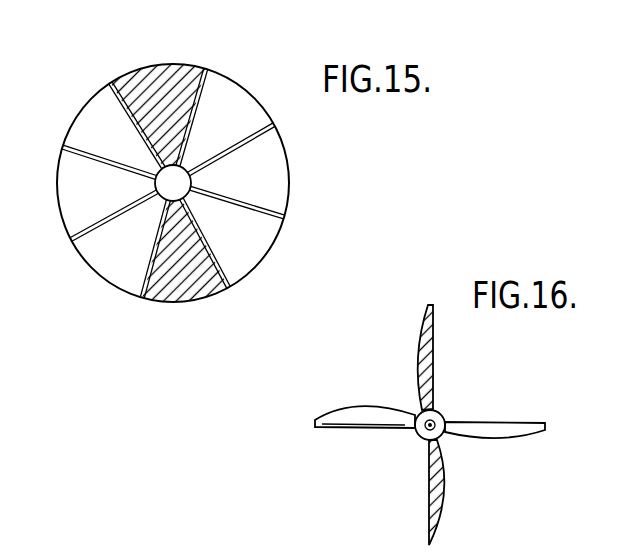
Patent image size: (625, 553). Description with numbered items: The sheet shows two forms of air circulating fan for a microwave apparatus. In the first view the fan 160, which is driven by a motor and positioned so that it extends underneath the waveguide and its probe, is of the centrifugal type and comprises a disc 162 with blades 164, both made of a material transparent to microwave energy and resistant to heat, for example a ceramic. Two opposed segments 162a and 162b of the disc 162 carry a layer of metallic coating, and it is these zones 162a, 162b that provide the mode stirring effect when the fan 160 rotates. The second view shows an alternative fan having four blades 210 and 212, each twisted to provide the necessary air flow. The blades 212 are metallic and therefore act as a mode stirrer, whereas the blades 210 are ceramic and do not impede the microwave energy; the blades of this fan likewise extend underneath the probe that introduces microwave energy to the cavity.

In FIG. 15, the air circulating fan 160 is at (85, 272).
In FIG. 15, the disc 162 is at (75, 209).
In FIG. 15, the segment 162a is at (193, 83).
In FIG. 15, the segment 162b is at (185, 289).
In FIG. 15, the blades 164 is at (70, 143).
In FIG. 16, the blades 210 is at (379, 424).
In FIG. 16, the blades 212 is at (437, 366).